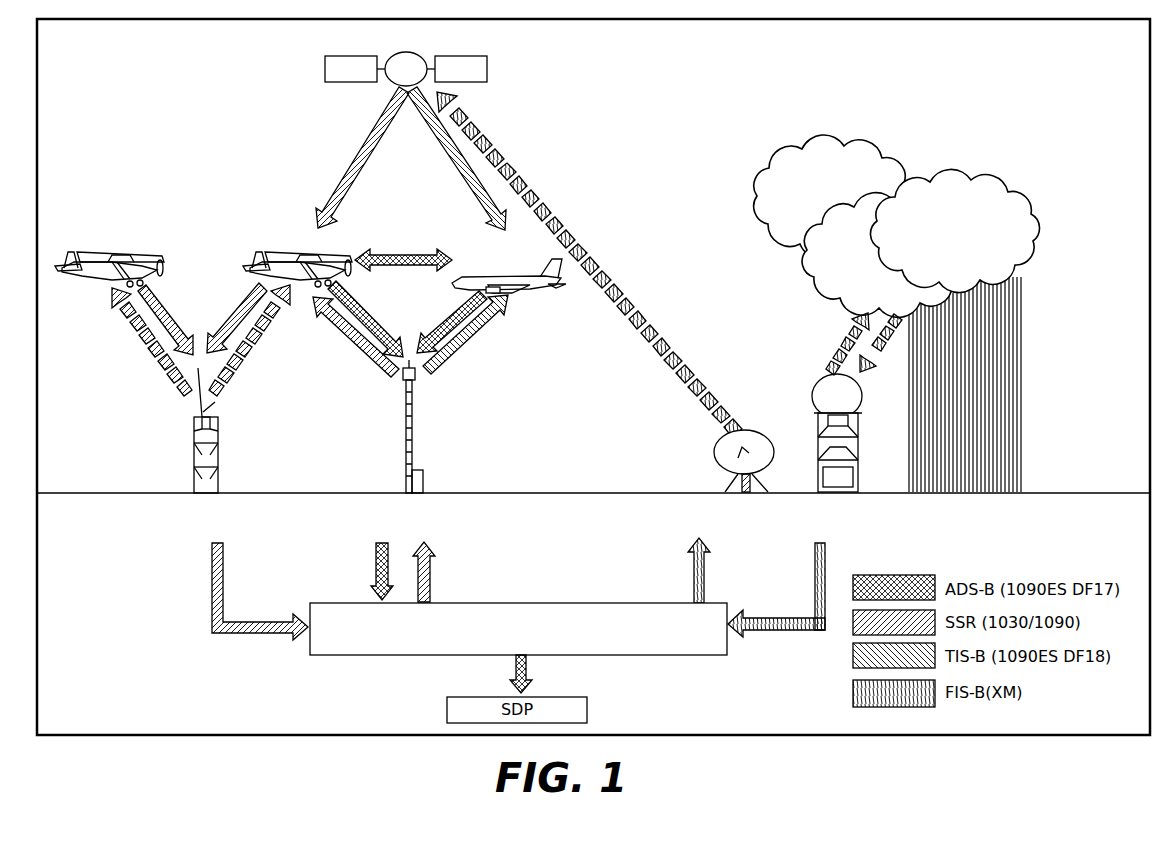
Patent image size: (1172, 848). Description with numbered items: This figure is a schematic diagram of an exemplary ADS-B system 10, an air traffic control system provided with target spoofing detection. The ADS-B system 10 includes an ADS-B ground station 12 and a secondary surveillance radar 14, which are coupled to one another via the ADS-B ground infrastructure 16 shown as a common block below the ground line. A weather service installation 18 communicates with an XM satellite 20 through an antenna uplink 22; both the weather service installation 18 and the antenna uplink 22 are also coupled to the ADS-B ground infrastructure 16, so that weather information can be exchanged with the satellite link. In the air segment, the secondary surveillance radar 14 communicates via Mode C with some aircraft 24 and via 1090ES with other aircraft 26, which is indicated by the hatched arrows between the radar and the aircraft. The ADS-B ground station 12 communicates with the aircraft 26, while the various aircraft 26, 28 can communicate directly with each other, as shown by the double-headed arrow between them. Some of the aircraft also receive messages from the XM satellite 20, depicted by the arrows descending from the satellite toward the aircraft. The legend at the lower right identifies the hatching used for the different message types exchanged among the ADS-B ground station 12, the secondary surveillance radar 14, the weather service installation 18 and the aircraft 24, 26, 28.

The ADS-B system 10 is at (545, 386).
The ADS-B ground station 12 is at (415, 432).
The secondary surveillance radar 14 is at (218, 462).
The ADS-B ground infrastructure 16 is at (529, 646).
The weather service installation 18 is at (820, 378).
The XM satellite 20 is at (487, 66).
The antenna uplink 22 is at (714, 455).
The aircraft 24 is at (100, 280).
The aircraft 26 is at (296, 282).
The aircraft 28 is at (542, 290).